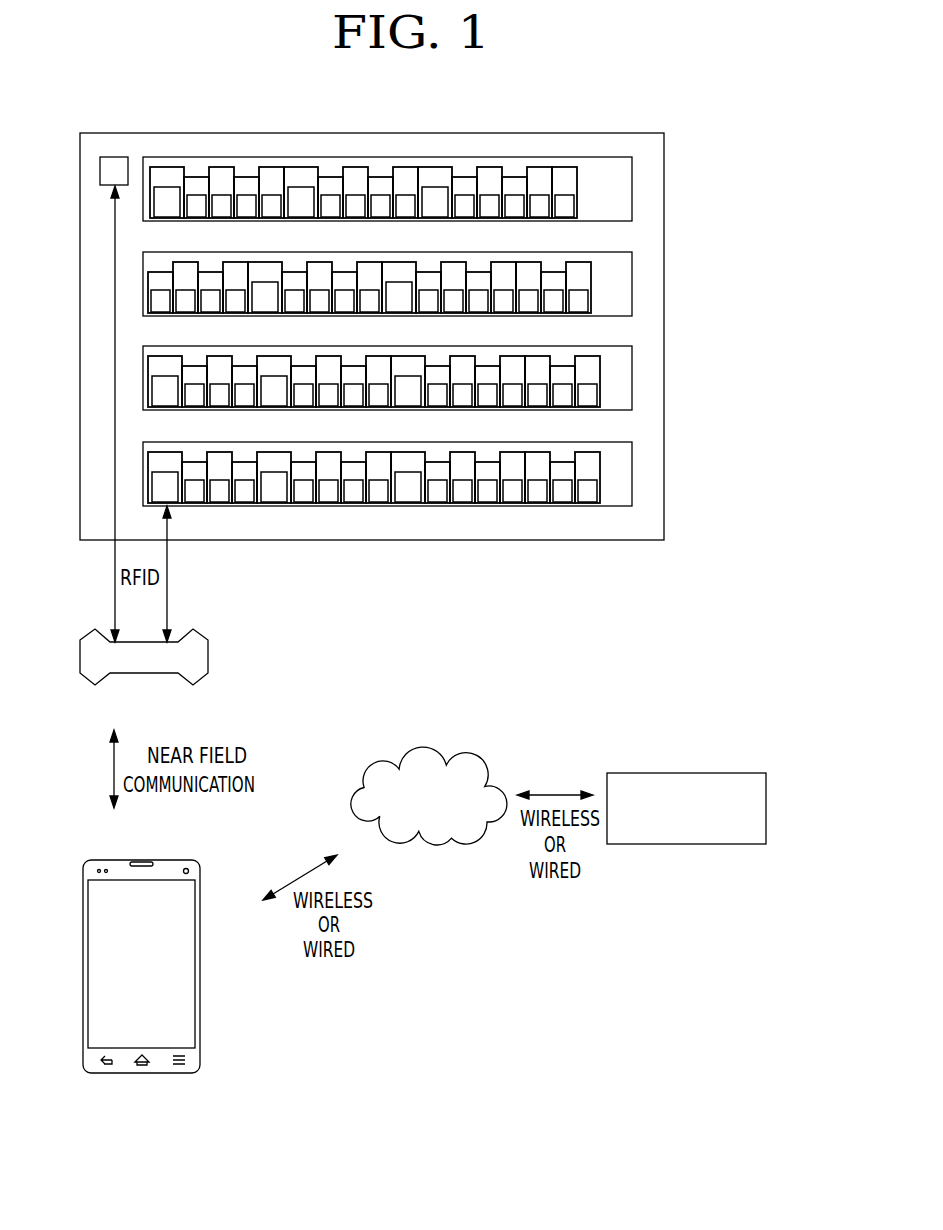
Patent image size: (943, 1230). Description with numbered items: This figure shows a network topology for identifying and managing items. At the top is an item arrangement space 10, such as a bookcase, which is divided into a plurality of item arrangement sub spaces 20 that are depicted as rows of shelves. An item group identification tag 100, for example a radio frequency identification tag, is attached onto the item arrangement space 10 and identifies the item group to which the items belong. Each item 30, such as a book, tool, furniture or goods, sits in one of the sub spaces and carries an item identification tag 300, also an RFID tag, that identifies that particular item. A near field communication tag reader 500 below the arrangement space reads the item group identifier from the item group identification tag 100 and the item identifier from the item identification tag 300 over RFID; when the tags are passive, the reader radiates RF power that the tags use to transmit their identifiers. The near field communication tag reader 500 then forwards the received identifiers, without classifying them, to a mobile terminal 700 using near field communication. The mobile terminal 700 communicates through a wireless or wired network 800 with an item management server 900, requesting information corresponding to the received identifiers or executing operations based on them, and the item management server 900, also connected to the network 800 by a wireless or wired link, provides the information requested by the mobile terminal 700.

The item arrangement space 10 is at (165, 133).
The item arrangement sub space 20 is at (220, 157).
The item 30 is at (355, 167).
The item group identification tag 100 is at (113, 157).
The item identification tag 300 is at (435, 187).
The near field communication tag reader 500 is at (208, 657).
The mobile terminal 700 is at (200, 1025).
The network 800 is at (427, 749).
The item management server 900 is at (670, 773).